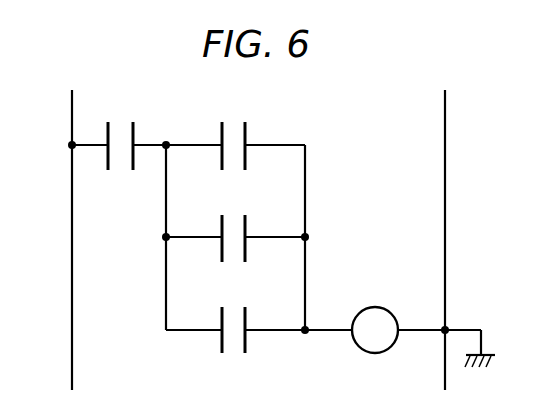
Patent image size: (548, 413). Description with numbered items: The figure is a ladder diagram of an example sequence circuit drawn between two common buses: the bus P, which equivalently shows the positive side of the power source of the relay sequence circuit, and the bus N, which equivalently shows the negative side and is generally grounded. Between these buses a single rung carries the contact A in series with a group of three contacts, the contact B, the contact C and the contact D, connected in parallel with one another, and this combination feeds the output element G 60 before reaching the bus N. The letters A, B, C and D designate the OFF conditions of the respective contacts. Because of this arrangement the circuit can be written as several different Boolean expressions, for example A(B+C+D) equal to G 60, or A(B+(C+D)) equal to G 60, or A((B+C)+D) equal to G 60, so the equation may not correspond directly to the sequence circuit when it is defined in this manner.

The common bus P is at (72, 112).
The common bus N is at (446, 112).
The contact A is at (120, 133).
The contact B is at (233, 133).
The contact C is at (233, 224).
The contact D is at (233, 316).
The output element G 60 is at (375, 316).